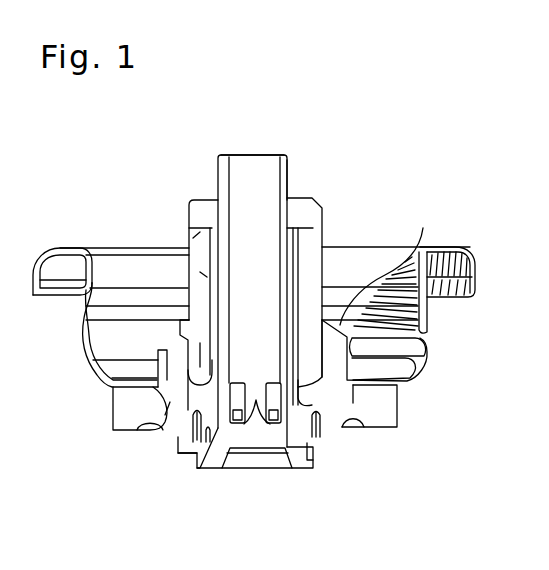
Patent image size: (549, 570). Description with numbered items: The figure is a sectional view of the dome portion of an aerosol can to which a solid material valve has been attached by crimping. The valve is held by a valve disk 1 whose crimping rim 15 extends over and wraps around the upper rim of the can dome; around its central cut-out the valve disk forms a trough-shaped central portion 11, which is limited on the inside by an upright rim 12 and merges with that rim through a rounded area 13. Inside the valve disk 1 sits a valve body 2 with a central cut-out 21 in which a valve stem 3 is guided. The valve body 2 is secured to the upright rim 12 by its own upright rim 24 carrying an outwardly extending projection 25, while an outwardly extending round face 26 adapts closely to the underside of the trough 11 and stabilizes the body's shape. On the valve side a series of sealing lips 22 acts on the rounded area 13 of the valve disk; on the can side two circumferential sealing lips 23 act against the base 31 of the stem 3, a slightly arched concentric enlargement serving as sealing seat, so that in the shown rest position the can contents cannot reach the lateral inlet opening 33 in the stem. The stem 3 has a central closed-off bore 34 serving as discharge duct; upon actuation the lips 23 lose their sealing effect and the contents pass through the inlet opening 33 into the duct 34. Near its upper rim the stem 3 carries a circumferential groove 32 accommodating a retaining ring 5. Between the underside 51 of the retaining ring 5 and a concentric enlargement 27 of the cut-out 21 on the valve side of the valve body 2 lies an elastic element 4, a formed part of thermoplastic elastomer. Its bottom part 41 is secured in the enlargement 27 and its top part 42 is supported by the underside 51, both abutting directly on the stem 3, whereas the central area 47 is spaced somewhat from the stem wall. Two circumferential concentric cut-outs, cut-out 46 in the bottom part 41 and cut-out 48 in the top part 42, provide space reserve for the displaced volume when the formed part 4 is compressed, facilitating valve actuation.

The valve disk 1 is at (425, 325).
The valve body 2 is at (187, 378).
The valve stem 3 is at (292, 185).
The elastic element 4 is at (193, 238).
The retaining ring 5 is at (205, 208).
The central portion 11 is at (400, 386).
The upright rim 12 is at (355, 358).
The rounded area 13 is at (397, 405).
The crimping rim 15 is at (448, 253).
The central cut-out 21 is at (278, 407).
The sealing lips 22 is at (183, 388).
The circumferential sealing lips 23 is at (192, 445).
The upright rim 24 is at (423, 236).
The outwardly extending projection 25 is at (410, 352).
The round face 26 is at (122, 420).
The concentric enlargement 27 is at (322, 378).
The base 31 is at (310, 450).
The circumferential groove 32 is at (291, 197).
The inlet opening 33 is at (287, 403).
The bore 34 is at (256, 168).
The bottom part 41 is at (200, 367).
The top part 42 is at (303, 245).
The circumferential concentric cut-out 46 is at (212, 358).
The central area 47 is at (207, 297).
The circumferential concentric cut-out 48 is at (193, 259).
The underside 51 is at (207, 273).